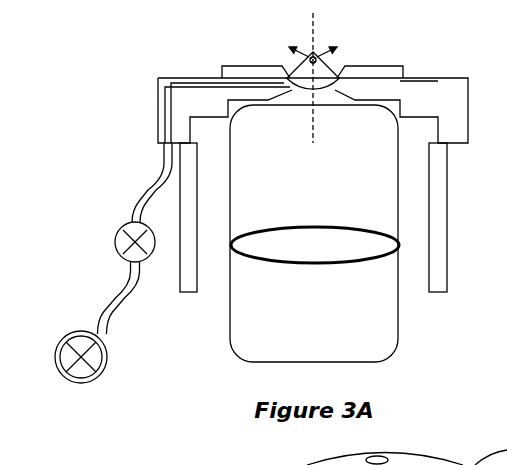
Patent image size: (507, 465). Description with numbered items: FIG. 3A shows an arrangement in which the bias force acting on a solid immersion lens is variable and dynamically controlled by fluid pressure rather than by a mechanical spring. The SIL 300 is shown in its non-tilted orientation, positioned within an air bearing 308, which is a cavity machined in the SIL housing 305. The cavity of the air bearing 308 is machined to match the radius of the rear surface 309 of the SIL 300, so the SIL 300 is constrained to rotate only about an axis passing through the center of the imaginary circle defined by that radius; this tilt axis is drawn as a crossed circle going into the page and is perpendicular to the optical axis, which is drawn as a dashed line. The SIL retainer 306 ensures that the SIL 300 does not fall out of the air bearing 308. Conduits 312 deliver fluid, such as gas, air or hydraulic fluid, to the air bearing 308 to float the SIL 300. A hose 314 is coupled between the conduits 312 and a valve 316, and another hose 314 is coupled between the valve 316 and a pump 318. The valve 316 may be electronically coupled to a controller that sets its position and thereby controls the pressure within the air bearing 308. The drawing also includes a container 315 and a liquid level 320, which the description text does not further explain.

The SIL 300 is at (318, 53).
The SIL housing 305 is at (438, 92).
The SIL retainer 306 is at (418, 90).
The air bearing 308 is at (345, 66).
The rear surface 309 is at (322, 92).
The conduits 312 is at (159, 84).
The hose 314 is at (163, 170).
The container 315 is at (382, 340).
The valve 316 is at (118, 235).
The pump 318 is at (108, 356).
The liquid level 320 is at (262, 230).